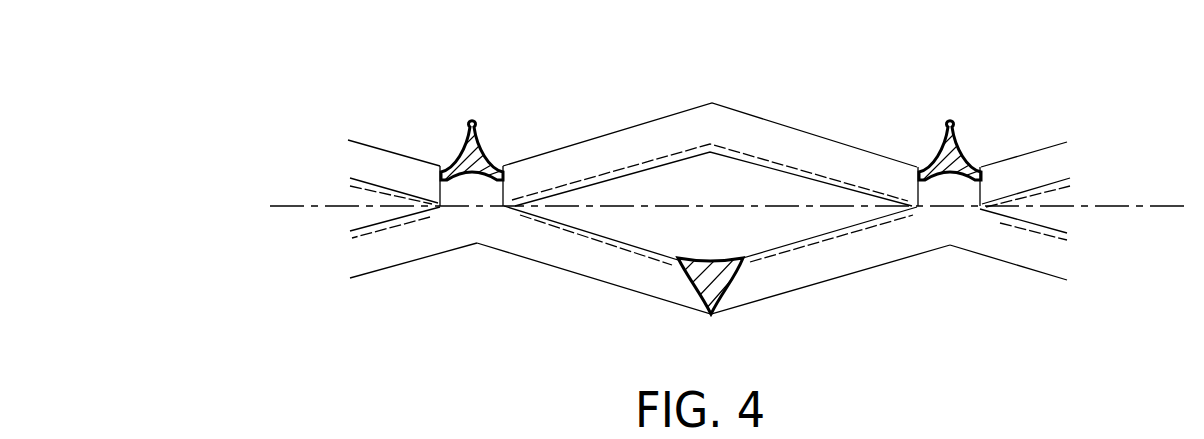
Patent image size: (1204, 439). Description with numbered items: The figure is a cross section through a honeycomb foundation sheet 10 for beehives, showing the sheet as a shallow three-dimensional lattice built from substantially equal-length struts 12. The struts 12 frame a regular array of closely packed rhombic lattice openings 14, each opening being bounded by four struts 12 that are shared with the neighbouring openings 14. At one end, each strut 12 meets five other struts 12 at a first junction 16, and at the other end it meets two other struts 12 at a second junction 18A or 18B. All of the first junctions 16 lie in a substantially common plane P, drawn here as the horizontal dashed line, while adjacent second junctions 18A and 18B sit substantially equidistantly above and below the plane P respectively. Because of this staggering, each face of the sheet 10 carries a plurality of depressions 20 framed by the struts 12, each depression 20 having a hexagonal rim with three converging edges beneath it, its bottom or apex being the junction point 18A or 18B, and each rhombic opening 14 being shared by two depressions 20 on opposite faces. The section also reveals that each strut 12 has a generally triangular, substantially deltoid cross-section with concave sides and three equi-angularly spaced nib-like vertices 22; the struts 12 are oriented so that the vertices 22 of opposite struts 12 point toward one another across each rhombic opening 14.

The honeycomb foundation sheet 10 is at (315, 264).
The strut 12 is at (590, 157).
The rhombic lattice opening 14 is at (632, 187).
The first junction 16 is at (472, 203).
The second junction 18A is at (713, 125).
The second junction 18B is at (698, 303).
The depression 20 is at (722, 240).
The nib-like vertex 22 is at (913, 173).
The common plane P is at (1135, 208).